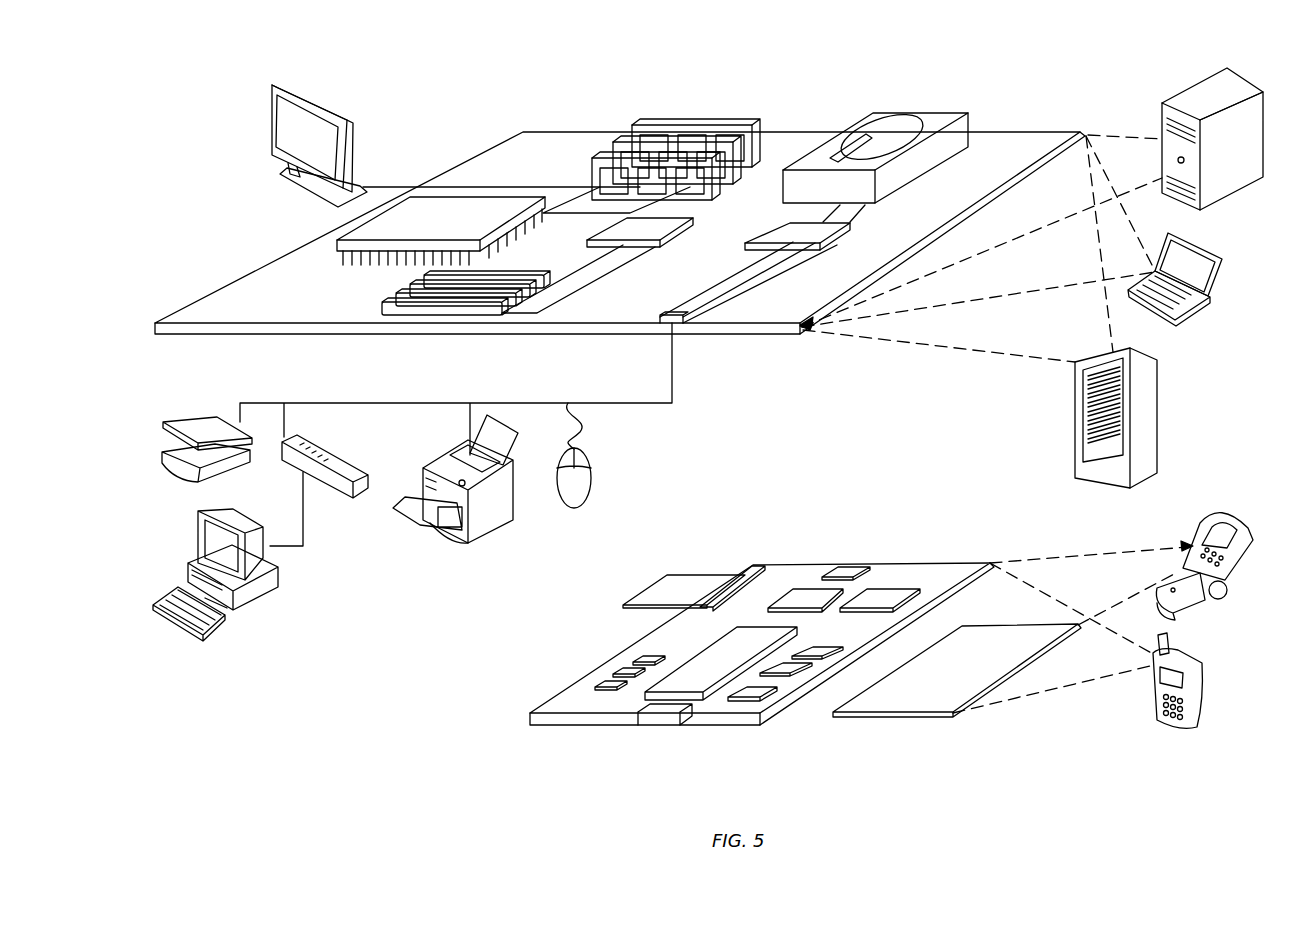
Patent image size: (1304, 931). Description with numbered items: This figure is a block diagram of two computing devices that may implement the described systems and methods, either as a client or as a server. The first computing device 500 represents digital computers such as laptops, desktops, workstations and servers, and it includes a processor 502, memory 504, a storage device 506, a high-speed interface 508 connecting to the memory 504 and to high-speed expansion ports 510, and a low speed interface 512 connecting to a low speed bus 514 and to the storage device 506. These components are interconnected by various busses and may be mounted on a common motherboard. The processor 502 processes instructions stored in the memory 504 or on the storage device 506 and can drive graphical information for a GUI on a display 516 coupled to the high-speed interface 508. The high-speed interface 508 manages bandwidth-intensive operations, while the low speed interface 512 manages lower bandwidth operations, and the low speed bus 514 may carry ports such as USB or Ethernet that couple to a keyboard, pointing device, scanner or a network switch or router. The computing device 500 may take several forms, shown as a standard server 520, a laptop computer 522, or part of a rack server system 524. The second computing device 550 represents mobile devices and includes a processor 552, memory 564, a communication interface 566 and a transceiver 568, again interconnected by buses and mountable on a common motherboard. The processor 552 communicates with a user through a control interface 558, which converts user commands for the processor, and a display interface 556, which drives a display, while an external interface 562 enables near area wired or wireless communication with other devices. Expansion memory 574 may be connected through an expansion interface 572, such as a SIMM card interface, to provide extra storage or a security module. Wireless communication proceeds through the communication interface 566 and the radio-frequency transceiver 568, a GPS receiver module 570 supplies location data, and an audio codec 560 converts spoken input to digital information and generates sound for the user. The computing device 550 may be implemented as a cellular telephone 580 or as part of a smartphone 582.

The computing device 500 is at (446, 112).
The processor 502 is at (333, 242).
The memory 504 is at (640, 124).
The storage device 506 is at (852, 122).
The high-speed interface 508 is at (590, 215).
The high-speed expansion ports 510 is at (400, 297).
The low speed interface 512 is at (780, 232).
The low speed bus 514 is at (683, 324).
The display 516 is at (273, 85).
The standard server 520 is at (1162, 118).
The laptop computer 522 is at (1222, 261).
The rack server system 524 is at (1075, 441).
The computing device 550 is at (509, 719).
The processor 552 is at (696, 682).
The display interface 556 is at (758, 692).
The control interface 558 is at (790, 672).
The audio codec 560 is at (815, 650).
The external interface 562 is at (662, 713).
The memory 564 is at (594, 678).
The communication interface 566 is at (806, 600).
The transceiver 568 is at (880, 600).
The GPS receiver module 570 is at (850, 565).
The expansion interface 572 is at (730, 578).
The expansion memory 574 is at (660, 580).
The cellular telephone 580 is at (1203, 518).
The smartphone 582 is at (1153, 688).